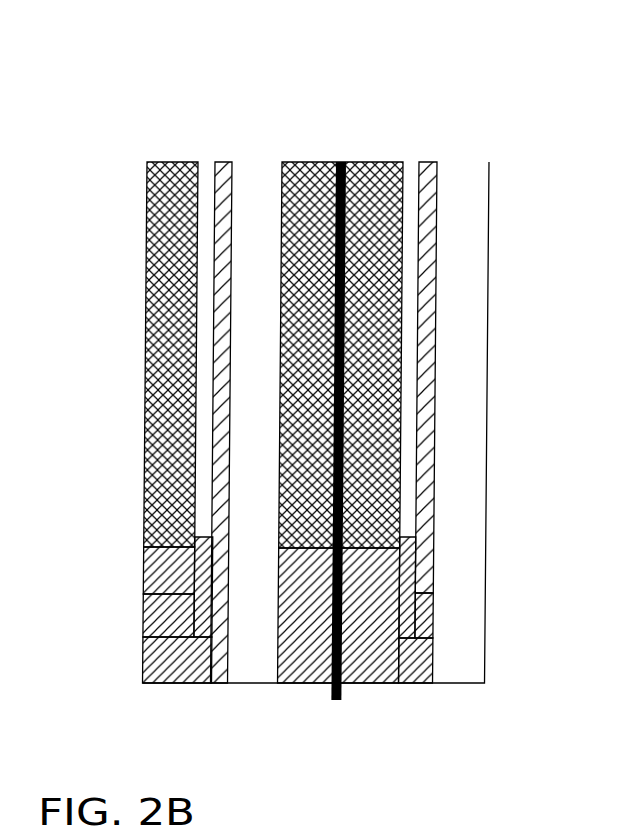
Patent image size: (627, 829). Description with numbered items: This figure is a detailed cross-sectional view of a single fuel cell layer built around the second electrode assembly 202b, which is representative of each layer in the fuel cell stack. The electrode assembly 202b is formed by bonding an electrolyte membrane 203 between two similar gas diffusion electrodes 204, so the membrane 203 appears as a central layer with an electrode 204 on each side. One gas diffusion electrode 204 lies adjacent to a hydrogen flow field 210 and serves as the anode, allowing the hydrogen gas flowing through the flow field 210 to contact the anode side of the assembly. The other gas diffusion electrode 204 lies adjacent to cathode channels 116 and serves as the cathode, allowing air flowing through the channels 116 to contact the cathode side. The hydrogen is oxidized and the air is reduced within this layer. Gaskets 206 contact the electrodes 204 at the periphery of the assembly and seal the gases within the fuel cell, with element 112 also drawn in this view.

The electrode layer 204 is at (310, 170).
The current collector 203 is at (340, 167).
The separator plate 112 is at (218, 330).
The seal portion 206 is at (292, 662).
The flow channel 210 is at (409, 490).
The gas passage 116 is at (249, 597).
The electrochemical cell stack 202b is at (393, 693).